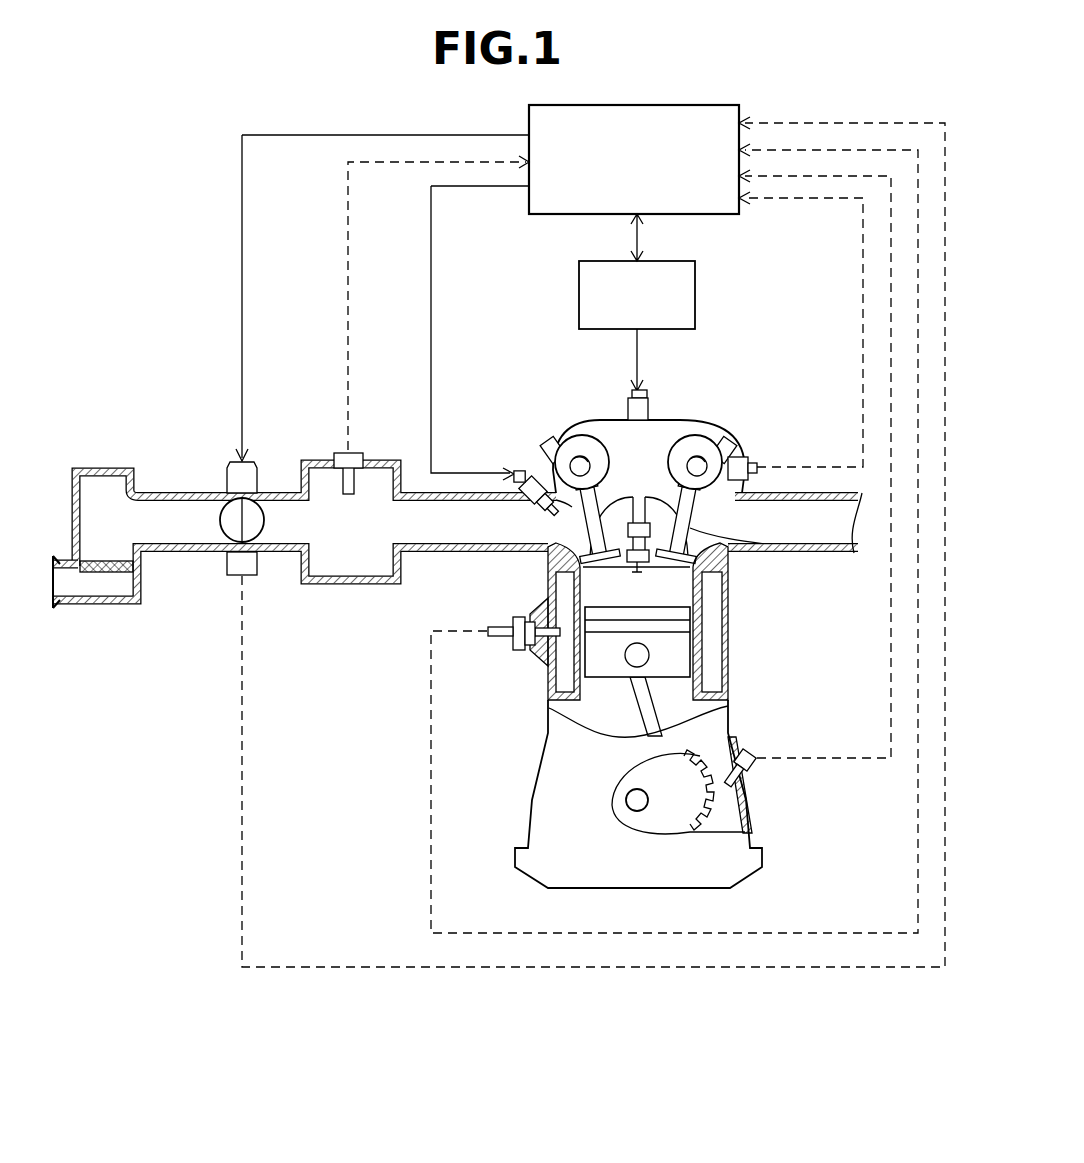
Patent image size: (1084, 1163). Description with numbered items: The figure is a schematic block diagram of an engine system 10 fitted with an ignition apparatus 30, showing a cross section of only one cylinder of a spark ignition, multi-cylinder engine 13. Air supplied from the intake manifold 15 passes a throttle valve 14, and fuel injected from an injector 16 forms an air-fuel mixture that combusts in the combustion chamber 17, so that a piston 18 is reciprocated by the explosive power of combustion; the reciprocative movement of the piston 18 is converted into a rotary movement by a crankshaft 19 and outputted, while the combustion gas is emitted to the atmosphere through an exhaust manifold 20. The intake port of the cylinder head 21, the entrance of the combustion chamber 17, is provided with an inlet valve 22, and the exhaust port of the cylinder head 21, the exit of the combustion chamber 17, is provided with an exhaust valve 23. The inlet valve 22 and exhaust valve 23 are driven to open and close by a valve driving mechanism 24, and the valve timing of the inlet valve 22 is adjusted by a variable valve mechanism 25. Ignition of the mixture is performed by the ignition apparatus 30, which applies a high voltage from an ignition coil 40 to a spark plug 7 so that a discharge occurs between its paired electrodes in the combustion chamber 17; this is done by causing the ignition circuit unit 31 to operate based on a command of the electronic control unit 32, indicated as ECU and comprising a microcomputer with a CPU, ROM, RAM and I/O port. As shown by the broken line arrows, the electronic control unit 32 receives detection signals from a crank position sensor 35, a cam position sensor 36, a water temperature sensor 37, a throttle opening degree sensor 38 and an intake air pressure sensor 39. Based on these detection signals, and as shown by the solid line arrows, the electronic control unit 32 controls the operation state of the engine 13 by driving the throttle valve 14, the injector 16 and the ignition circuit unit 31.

The engine system 10 is at (132, 419).
The throttle valve 14 is at (222, 520).
The throttle opening degree sensor 38 is at (227, 571).
The intake air pressure sensor 39 is at (355, 452).
The intake manifold 15 is at (428, 556).
The injector 16 is at (520, 474).
The inlet valve 22 is at (592, 532).
The variable valve mechanism 25 is at (578, 445).
The valve driving mechanism 24 is at (702, 443).
The engine 13 is at (606, 411).
The cylinder head 21 is at (650, 404).
The cam position sensor 36 is at (748, 458).
The exhaust valve 23 is at (780, 546).
The exhaust manifold 20 is at (832, 553).
The spark plug 7 is at (706, 578).
The combustion chamber 17 is at (660, 592).
The piston 18 is at (672, 652).
The water temperature sensor 37 is at (510, 640).
The crankshaft 19 is at (632, 801).
The crank position sensor 35 is at (750, 756).
The electronic control unit 32 is at (700, 214).
The ignition circuit unit 31 is at (697, 292).
The ignition coil 40 is at (698, 353).
The ignition apparatus 30 is at (672, 248).